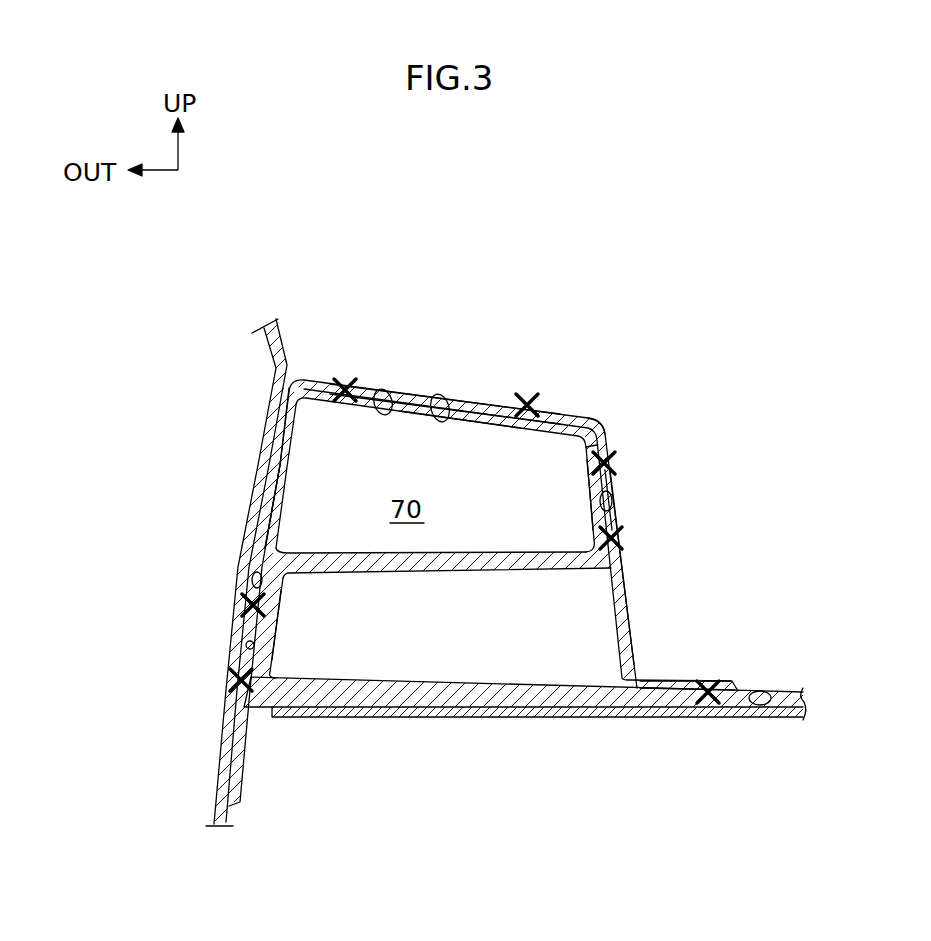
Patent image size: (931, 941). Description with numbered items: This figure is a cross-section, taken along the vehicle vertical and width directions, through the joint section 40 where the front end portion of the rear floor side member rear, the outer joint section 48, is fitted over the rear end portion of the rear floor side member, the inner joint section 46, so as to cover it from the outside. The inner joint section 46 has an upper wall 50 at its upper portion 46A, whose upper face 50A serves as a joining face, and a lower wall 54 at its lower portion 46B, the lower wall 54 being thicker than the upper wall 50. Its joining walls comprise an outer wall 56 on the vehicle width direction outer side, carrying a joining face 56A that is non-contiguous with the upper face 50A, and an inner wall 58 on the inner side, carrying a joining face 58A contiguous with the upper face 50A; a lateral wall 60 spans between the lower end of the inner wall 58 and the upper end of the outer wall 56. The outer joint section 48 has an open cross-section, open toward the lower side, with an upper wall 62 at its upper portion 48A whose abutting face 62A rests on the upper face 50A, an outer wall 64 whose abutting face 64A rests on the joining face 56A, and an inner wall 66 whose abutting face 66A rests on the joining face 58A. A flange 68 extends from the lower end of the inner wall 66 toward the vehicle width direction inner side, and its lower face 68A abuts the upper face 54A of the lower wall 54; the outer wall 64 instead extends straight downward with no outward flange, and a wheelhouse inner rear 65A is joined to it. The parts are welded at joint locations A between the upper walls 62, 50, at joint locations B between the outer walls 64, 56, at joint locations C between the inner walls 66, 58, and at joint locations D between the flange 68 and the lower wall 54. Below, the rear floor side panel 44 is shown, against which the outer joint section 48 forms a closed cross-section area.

The joint section 40 is at (648, 283).
The wheelhouse inner rear 65A is at (262, 432).
The outer wall 64 is at (255, 512).
The abutting face 64A is at (265, 578).
The inner joint section 46 is at (470, 403).
The upper wall 62 is at (372, 393).
The abutting face 62A is at (385, 398).
The upper wall 50 is at (420, 400).
The upper face 50A is at (447, 415).
The upper portion 46A is at (612, 497).
The lower portion 46B is at (250, 645).
The inner wall 66 is at (628, 600).
The abutting face 66A is at (600, 426).
The flange 68 is at (672, 684).
The lower face 68A is at (690, 690).
The outer joint section 48 is at (612, 445).
The upper portion 48A is at (618, 488).
The outer wall 56 is at (256, 668).
The joining face 56A is at (272, 660).
The inner wall 58 is at (620, 525).
The joining face 58A is at (598, 515).
The lateral wall 60 is at (457, 566).
The lower wall 54 is at (415, 705).
The upper face 54A is at (762, 702).
The rear floor side panel 44 is at (608, 714).
The joint locations A is at (347, 385).
The joint locations B is at (245, 605).
The joint locations C is at (620, 463).
The joint locations D is at (722, 689).